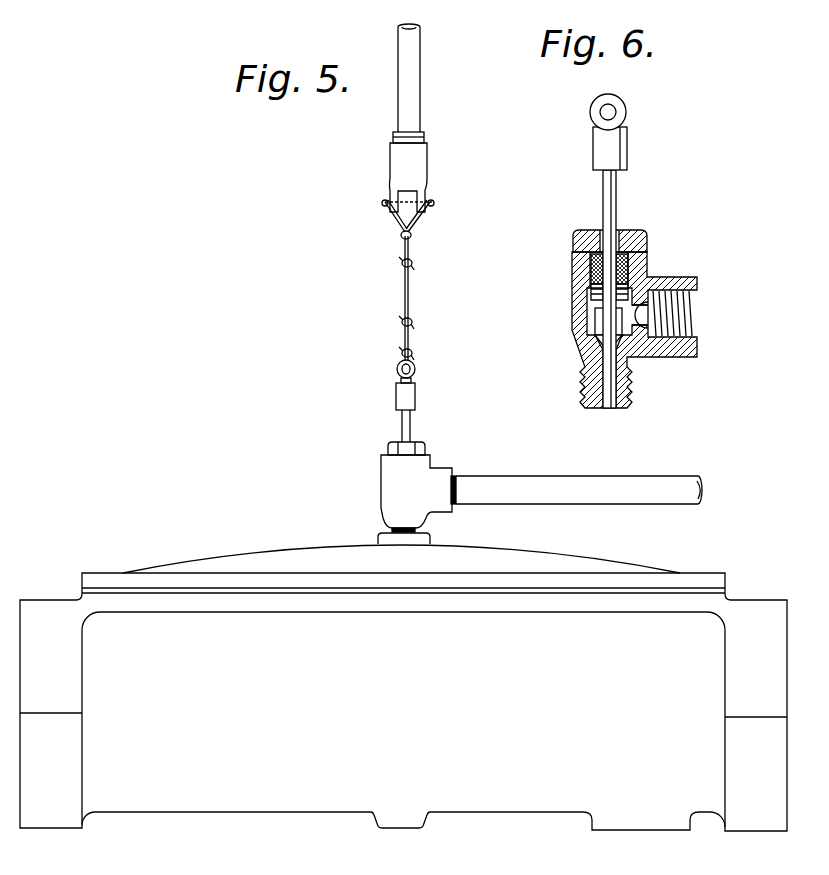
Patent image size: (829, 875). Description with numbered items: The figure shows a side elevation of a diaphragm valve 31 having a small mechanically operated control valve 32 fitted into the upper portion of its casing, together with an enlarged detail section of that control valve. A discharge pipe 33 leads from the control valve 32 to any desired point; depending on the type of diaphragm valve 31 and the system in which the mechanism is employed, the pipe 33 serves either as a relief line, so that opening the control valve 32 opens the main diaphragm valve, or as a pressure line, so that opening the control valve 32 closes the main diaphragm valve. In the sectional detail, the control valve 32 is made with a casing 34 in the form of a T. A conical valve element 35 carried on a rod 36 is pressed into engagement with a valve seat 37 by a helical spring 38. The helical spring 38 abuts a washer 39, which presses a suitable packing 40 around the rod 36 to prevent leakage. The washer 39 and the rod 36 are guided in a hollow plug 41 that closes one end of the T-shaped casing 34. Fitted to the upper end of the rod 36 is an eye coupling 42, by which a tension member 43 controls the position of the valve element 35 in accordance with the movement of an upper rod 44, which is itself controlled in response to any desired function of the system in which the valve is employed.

In FIG. 5, the diaphragm valve 31 is at (193, 553).
In FIG. 5, the control valve 32 is at (400, 481).
In FIG. 6, the control valve 32 is at (604, 330).
In FIG. 5, the discharge pipe 33 is at (551, 486).
In FIG. 6, the casing 34 is at (577, 322).
In FIG. 6, the conical valve element 35 is at (592, 350).
In FIG. 5, the rod 36 is at (412, 418).
In FIG. 6, the rod 36 is at (618, 186).
In FIG. 6, the valve seat 37 is at (620, 347).
In FIG. 6, the helical spring 38 is at (640, 287).
In FIG. 6, the washer 39 is at (580, 272).
In FIG. 6, the packing 40 is at (578, 247).
In FIG. 5, the hollow plug 41 is at (388, 447).
In FIG. 6, the hollow plug 41 is at (582, 230).
In FIG. 5, the eye coupling 42 is at (398, 396).
In FIG. 6, the eye coupling 42 is at (603, 146).
In FIG. 5, the tension member 43 is at (405, 302).
In FIG. 5, the rod 44 is at (408, 88).